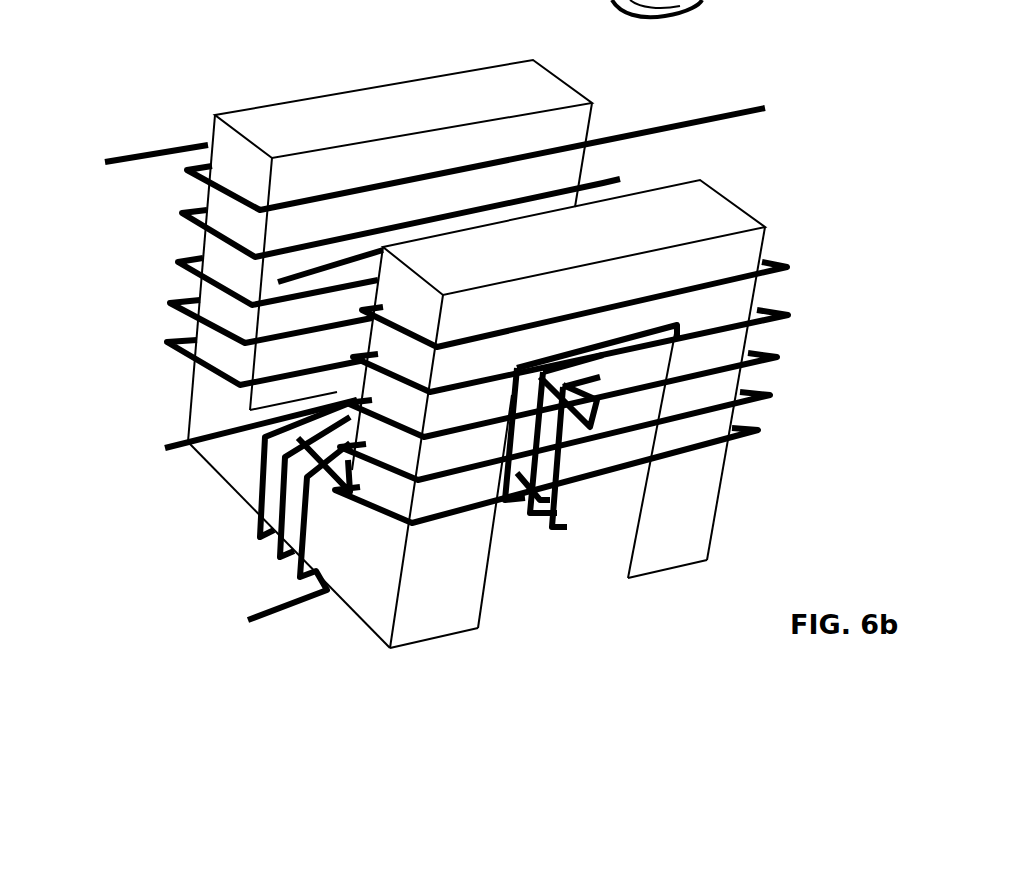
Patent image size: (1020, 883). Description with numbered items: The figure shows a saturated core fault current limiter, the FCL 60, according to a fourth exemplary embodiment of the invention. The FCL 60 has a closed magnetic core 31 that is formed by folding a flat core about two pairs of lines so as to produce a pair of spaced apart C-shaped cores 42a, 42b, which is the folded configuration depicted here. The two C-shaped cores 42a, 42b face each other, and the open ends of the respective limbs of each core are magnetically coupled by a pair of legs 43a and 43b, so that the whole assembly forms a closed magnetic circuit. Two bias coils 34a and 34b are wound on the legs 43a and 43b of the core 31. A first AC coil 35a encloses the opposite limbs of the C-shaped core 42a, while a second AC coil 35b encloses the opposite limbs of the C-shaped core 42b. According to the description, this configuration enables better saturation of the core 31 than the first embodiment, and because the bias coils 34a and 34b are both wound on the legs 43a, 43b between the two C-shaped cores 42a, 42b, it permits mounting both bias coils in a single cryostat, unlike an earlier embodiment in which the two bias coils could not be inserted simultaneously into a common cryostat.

The C-shaped core 42a is at (292, 108).
The C-shaped core 42b is at (566, 365).
The first AC coil 35a is at (133, 150).
The second AC coil 35b is at (790, 253).
The bias coil 34a is at (172, 455).
The bias coil 34b is at (540, 520).
The leg 43a is at (380, 603).
The leg 43b is at (620, 558).
The closed magnetic core 31 is at (697, 118).
The FCL 60 is at (672, 700).